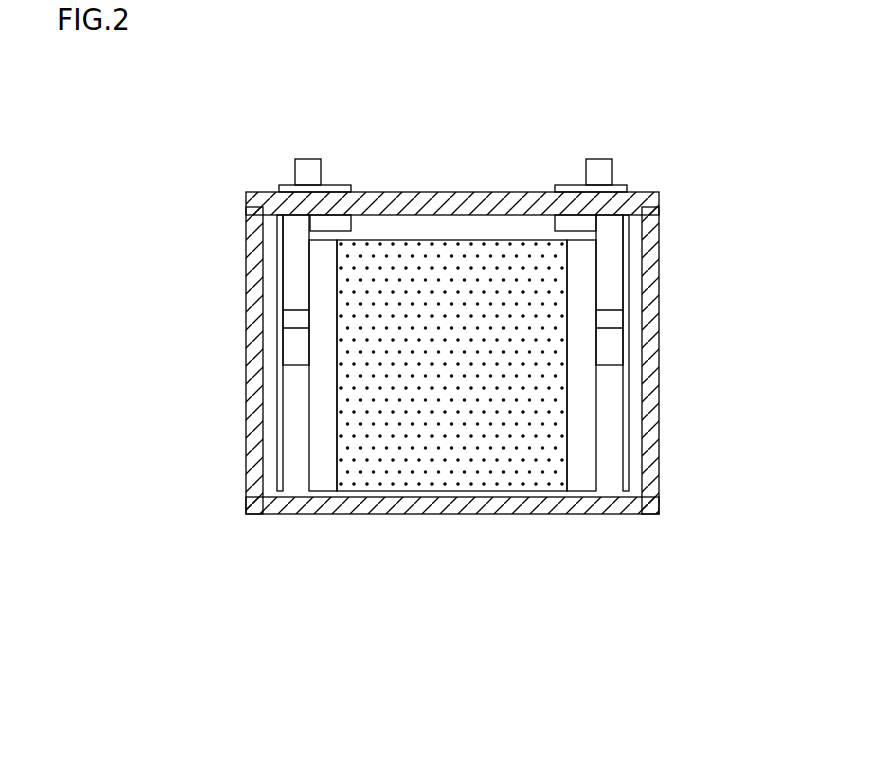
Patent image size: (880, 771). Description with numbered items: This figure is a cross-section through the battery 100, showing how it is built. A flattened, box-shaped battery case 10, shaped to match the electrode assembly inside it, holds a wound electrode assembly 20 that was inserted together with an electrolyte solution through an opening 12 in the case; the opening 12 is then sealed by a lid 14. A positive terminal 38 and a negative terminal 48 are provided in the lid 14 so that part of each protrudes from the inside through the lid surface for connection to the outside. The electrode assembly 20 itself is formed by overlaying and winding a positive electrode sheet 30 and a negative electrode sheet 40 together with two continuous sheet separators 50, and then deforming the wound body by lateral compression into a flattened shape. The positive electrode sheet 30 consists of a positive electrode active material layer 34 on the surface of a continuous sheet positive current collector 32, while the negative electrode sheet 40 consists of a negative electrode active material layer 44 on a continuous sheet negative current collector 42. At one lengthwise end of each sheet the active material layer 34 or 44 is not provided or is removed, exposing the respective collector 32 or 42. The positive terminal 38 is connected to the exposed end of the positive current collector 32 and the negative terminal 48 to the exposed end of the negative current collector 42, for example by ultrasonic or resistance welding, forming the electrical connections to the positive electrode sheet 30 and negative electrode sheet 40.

The battery 100 is at (215, 75).
The battery case 10 is at (664, 458).
The opening 12 is at (431, 235).
The lid 14 is at (393, 190).
The wound electrode assembly 20 is at (477, 236).
The positive electrode sheet 30 is at (341, 406).
The positive current collector 32 is at (307, 479).
The positive electrode active material layer 34 is at (400, 455).
The positive terminal 38 is at (305, 165).
The negative electrode sheet 40 is at (580, 400).
The negative current collector 42 is at (592, 482).
The negative electrode active material layer 44 is at (539, 455).
The negative terminal 48 is at (600, 165).
The separator 50 is at (466, 473).